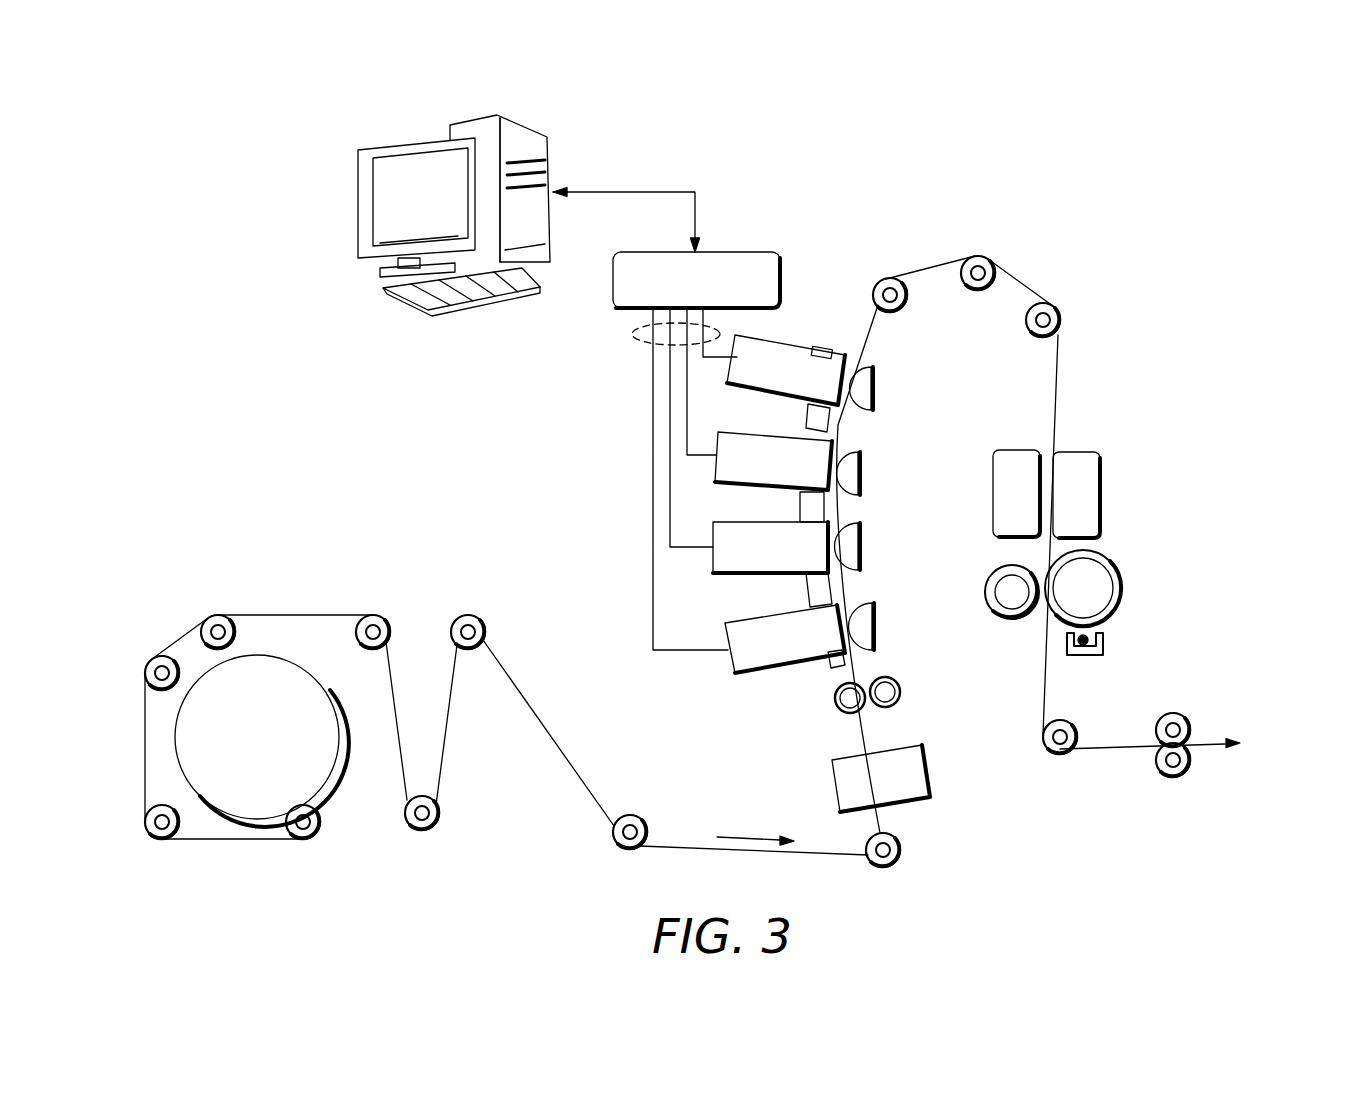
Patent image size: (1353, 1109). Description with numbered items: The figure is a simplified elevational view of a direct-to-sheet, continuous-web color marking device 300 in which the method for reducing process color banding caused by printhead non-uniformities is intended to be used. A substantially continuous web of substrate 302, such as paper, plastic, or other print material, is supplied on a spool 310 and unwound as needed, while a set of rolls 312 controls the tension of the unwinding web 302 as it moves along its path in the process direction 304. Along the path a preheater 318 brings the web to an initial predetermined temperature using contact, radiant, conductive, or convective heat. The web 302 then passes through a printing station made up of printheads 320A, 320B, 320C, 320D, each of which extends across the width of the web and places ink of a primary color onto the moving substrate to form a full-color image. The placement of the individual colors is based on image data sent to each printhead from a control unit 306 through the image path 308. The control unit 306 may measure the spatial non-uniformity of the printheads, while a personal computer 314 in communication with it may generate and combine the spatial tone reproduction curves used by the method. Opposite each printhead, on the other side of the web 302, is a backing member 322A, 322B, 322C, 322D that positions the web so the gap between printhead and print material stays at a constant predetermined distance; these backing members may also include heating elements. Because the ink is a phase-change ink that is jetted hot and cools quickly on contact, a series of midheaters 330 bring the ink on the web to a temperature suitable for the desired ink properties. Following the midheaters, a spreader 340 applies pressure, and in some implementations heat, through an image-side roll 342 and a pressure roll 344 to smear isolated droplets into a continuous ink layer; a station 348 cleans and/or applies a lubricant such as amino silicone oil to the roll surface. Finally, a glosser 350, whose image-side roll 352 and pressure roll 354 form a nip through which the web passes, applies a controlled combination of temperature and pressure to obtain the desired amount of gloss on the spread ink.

The color marking device 300 is at (703, 500).
The web of substrate 302 is at (264, 617).
The process direction 304 is at (727, 833).
The control unit 306 is at (666, 248).
The image path 308 is at (634, 333).
The spool 310 is at (262, 741).
The rolls 312 is at (168, 838).
The personal computer 314 is at (547, 152).
The preheater 318 is at (930, 768).
The printhead 320A is at (786, 370).
The printhead 320B is at (773, 447).
The printhead 320C is at (770, 532).
The printhead 320D is at (785, 623).
The backing member 322A is at (874, 388).
The backing member 322B is at (862, 470).
The backing member 322C is at (862, 545).
The backing member 322D is at (875, 625).
The midheaters 330 is at (1027, 450).
The spreader 340 is at (1090, 549).
The image-side roll 342 is at (1103, 590).
The pressure roll 344 is at (1007, 600).
The station 348 is at (1095, 656).
The glosser 350 is at (1160, 722).
The image-side roll 352 is at (1189, 722).
The pressure roll 354 is at (1190, 769).